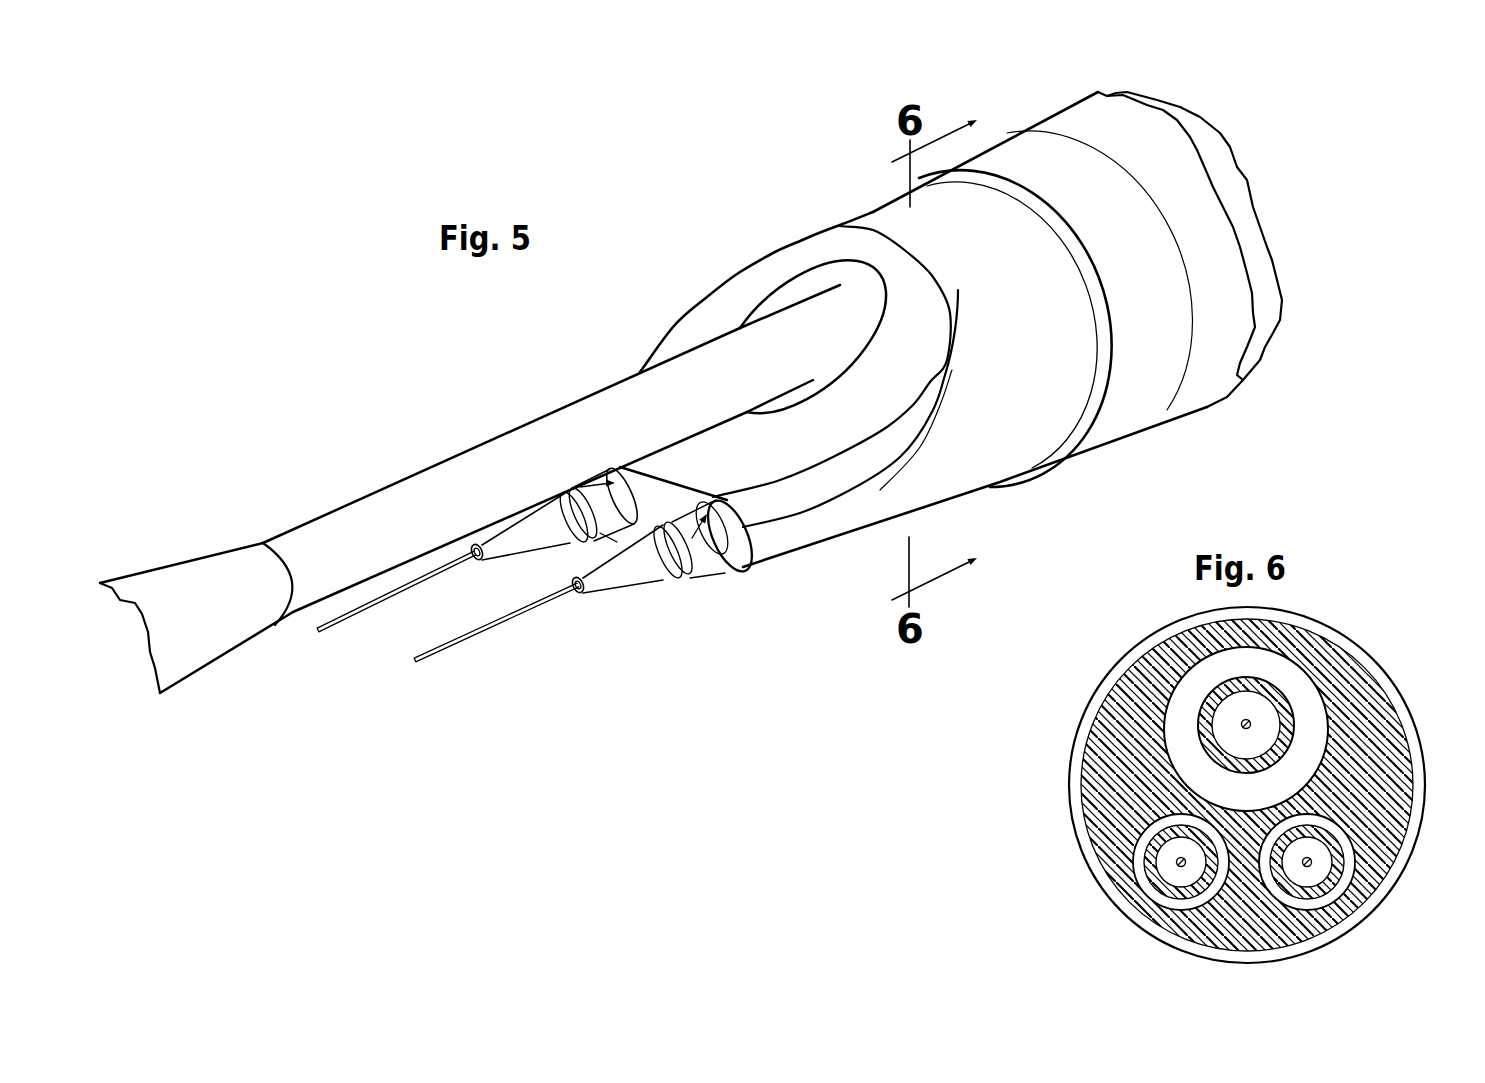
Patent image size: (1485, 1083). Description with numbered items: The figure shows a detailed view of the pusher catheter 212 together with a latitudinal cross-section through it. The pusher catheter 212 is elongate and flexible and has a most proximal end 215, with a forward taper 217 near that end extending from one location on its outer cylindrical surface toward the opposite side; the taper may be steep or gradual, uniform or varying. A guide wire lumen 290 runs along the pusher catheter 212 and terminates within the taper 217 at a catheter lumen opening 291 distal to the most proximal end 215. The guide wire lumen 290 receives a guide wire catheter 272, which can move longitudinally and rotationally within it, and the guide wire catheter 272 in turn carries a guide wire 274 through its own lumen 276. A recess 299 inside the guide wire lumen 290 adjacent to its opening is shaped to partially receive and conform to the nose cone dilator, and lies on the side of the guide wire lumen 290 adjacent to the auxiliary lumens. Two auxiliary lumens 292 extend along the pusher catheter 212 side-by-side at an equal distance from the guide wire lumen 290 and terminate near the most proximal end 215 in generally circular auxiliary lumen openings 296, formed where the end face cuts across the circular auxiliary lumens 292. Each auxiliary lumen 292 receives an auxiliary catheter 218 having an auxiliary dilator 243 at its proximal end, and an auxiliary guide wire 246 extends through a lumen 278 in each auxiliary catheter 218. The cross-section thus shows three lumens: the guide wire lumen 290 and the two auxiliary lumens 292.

In FIG. 5, the pusher catheter 212 is at (1007, 443).
In FIG. 6, the pusher catheter 212 is at (1383, 668).
In FIG. 5, the most proximal end 215 is at (757, 573).
In FIG. 5, the forward taper 217 is at (682, 347).
In FIG. 5, the auxiliary catheter 218 is at (680, 575).
In FIG. 6, the auxiliary catheter 218 is at (1345, 872).
In FIG. 5, the auxiliary dilator 243 is at (610, 583).
In FIG. 5, the auxiliary guide wire 246 is at (387, 597).
In FIG. 6, the auxiliary guide wire 246 is at (1313, 862).
In FIG. 5, the guide wire catheter 272 is at (353, 502).
In FIG. 6, the guide wire catheter 272 is at (1218, 684).
In FIG. 6, the guide wire 274 is at (1241, 722).
In FIG. 6, the lumen 276 is at (1200, 724).
In FIG. 6, the lumen 278 is at (1318, 892).
In FIG. 5, the guide wire lumen 290 is at (795, 296).
In FIG. 6, the guide wire lumen 290 is at (1277, 660).
In FIG. 5, the catheter lumen opening 291 is at (787, 283).
In FIG. 5, the auxiliary lumen 292 is at (573, 480).
In FIG. 6, the auxiliary lumen 292 is at (1143, 880).
In FIG. 5, the auxiliary lumen opening 296 is at (740, 517).
In FIG. 5, the recess 299 is at (845, 272).